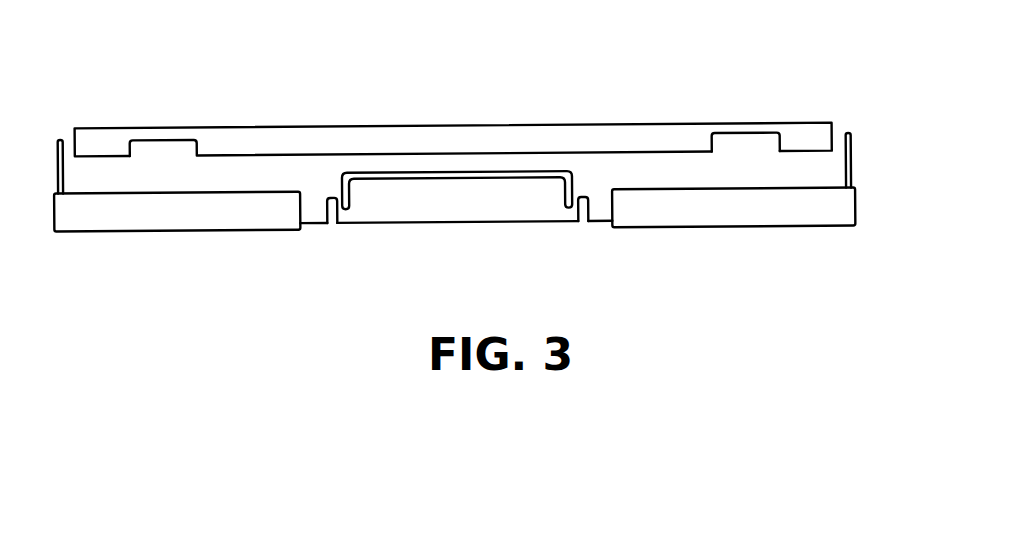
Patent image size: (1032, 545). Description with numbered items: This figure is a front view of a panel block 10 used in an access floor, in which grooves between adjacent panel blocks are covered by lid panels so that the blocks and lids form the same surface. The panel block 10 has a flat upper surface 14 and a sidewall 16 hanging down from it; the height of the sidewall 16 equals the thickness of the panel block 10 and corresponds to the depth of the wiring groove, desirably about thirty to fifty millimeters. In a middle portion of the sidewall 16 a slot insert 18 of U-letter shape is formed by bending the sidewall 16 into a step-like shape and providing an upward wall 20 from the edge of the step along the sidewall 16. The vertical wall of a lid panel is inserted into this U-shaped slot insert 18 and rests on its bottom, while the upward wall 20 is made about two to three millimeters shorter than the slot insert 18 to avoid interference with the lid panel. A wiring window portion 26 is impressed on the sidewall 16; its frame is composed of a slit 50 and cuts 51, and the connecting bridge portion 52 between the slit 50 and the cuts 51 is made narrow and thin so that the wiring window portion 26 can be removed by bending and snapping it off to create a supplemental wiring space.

The panel block 10 is at (460, 114).
The upper surface 14 is at (292, 126).
The sidewall 16 is at (648, 172).
The slot insert 18 is at (744, 122).
The upward wall 20 is at (740, 147).
The wiring window portion 26 is at (440, 207).
The slit 50 is at (490, 172).
The cuts 51 is at (332, 207).
The connecting bridge portion 52 is at (338, 203).